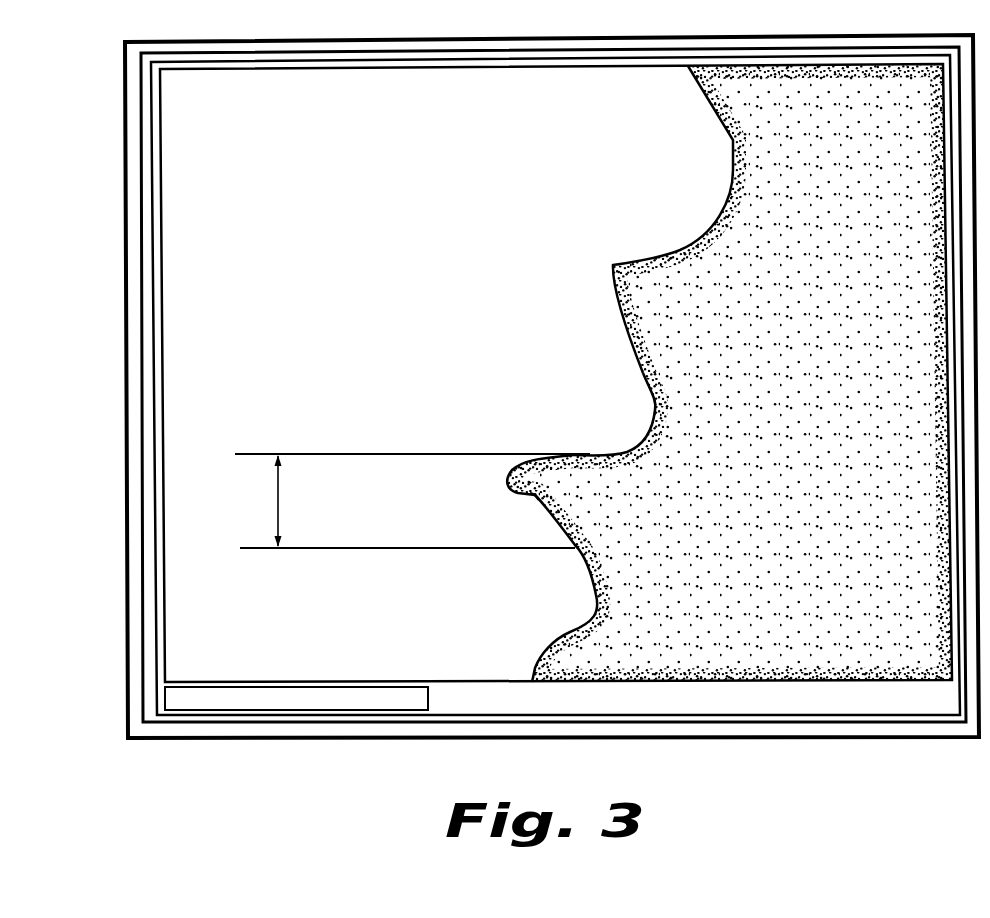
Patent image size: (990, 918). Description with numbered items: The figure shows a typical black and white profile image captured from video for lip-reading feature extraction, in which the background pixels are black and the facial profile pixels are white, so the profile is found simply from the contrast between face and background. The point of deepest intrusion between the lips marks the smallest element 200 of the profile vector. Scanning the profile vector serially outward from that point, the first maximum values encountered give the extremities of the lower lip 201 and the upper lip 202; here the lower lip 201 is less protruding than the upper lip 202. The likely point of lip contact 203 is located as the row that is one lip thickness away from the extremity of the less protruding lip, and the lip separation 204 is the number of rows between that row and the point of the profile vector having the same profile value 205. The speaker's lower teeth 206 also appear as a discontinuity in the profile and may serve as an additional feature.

The smallest element of the profile vector 200 is at (508, 483).
The lower lip 201 is at (596, 605).
The upper lip 202 is at (652, 408).
The point of lip contact 203 is at (377, 548).
The lip separation 204 is at (270, 501).
The point having the same profile value 205 is at (387, 453).
The lower teeth 206 is at (527, 499).